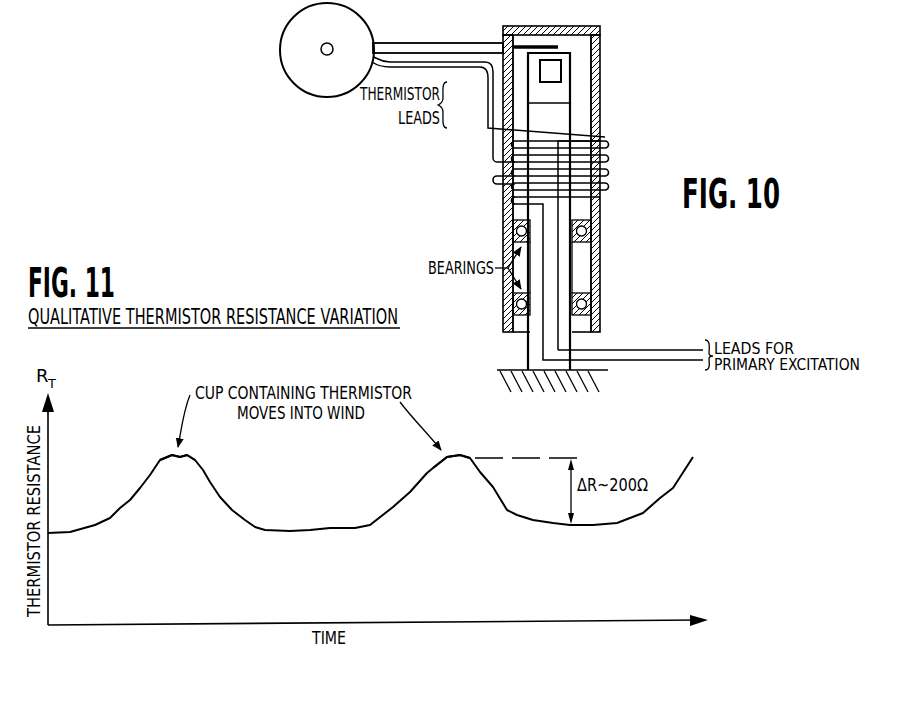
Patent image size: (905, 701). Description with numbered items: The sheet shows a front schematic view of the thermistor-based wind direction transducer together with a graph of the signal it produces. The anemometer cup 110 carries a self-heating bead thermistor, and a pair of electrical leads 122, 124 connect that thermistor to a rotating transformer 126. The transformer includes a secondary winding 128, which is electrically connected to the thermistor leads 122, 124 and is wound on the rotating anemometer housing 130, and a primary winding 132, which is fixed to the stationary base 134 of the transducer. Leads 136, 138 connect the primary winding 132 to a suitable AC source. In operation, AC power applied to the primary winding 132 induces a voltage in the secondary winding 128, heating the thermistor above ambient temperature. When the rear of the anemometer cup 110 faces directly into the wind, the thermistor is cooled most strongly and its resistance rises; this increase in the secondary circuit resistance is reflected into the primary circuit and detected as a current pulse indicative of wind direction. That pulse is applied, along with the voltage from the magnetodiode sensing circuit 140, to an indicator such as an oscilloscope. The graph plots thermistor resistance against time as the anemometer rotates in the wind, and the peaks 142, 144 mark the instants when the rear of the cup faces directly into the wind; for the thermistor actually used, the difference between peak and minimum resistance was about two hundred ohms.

In FIG. 10, the anemometer cup 110 is at (282, 56).
In FIG. 10, the electrical lead 122 is at (493, 100).
In FIG. 10, the electrical lead 124 is at (488, 122).
In FIG. 10, the rotating transformer 126 is at (612, 151).
In FIG. 10, the secondary winding 128 is at (605, 143).
In FIG. 10, the rotating anemometer housing 130 is at (600, 262).
In FIG. 10, the primary winding 132 is at (605, 186).
In FIG. 10, the stationary base 134 is at (528, 348).
In FIG. 10, the lead 136 is at (640, 350).
In FIG. 10, the lead 138 is at (640, 360).
In FIG. 10, the magnetodiode sensing circuit 140 is at (552, 70).
In FIG. 11, the peak 142 is at (186, 455).
In FIG. 11, the peak 144 is at (462, 455).